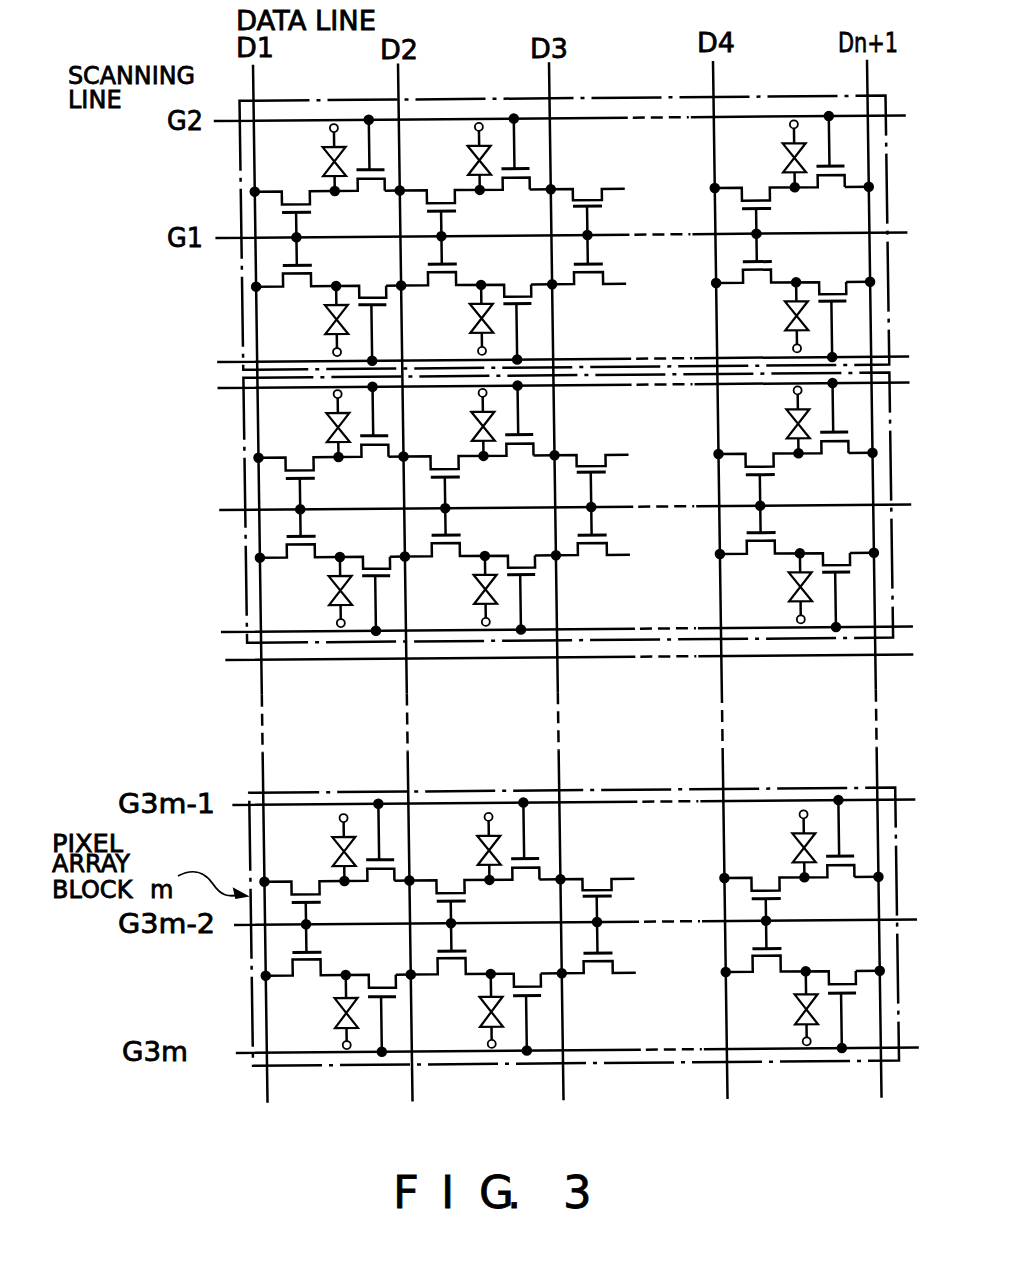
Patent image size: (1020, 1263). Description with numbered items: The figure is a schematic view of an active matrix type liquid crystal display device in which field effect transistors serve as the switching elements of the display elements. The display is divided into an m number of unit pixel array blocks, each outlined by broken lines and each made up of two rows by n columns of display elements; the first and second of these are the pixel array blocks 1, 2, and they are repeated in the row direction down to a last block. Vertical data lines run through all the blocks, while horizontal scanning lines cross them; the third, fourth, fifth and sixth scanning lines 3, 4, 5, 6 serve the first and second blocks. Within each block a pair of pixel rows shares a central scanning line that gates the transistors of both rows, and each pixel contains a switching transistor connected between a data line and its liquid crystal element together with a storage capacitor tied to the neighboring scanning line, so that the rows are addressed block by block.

The pixel array block 1 is at (242, 213).
The pixel array block 2 is at (242, 485).
The scanning line 3 is at (539, 360).
The scanning line 4 is at (541, 508).
The scanning line 5 is at (541, 388).
The scanning line 6 is at (542, 631).